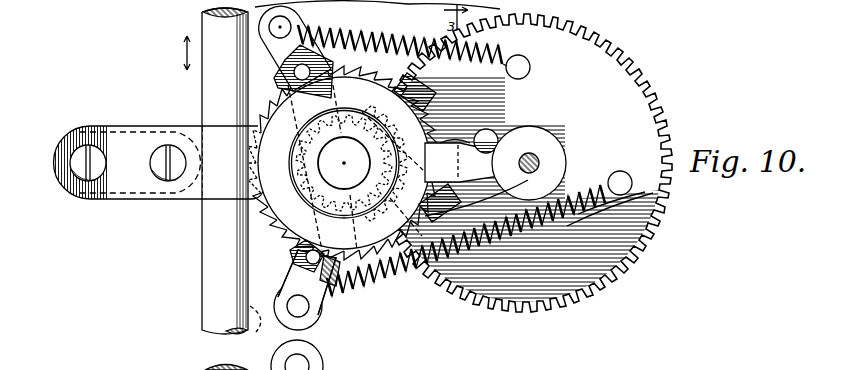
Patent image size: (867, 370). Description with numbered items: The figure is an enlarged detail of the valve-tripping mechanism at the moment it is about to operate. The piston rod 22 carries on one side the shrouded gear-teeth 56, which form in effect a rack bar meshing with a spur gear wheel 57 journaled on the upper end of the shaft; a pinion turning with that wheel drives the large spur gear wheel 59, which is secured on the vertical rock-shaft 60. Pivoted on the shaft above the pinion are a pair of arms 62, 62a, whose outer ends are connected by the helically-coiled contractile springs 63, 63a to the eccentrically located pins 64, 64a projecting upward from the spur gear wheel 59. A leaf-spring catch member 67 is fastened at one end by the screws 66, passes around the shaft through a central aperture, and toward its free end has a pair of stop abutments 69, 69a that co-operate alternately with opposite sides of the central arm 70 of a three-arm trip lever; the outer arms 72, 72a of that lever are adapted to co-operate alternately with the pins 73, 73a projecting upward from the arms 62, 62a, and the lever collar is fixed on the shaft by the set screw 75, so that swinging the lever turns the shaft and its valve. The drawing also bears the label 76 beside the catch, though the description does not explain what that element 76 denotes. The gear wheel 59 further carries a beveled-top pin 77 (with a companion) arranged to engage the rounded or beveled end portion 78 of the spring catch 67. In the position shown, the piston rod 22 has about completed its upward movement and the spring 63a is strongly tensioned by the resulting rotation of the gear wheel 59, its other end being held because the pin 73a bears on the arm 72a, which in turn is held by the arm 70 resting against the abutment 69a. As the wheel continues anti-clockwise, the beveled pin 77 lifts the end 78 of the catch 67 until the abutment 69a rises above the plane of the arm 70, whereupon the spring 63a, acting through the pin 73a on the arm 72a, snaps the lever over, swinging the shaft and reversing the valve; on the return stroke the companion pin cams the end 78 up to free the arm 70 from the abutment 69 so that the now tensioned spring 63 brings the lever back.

The piston rod 22 is at (205, 262).
The shrouded gear-teeth 56 is at (262, 328).
The spur gear wheel 57 is at (296, 246).
The large spur gear wheel 59 is at (537, 167).
The vertical rock-shaft 60 is at (539, 159).
The arm 62 is at (305, 20).
The arm 62a is at (313, 320).
The helically-coiled contractile spring 63 is at (389, 38).
The helically-coiled contractile spring 63a is at (466, 247).
The eccentrically located pin 64 is at (531, 70).
The eccentrically located pin 64a is at (630, 163).
The screws 66 is at (160, 153).
The leaf-spring catch member 67 is at (196, 201).
The stop abutment 69 is at (455, 141).
The stop abutment 69a is at (490, 194).
The central arm 70 is at (608, 184).
The outer arm 72 is at (437, 95).
The outer arm 72a is at (332, 276).
The pin 73 is at (303, 71).
The pin 73a is at (327, 294).
The set screw 75 is at (344, 163).
The slide 76 is at (470, 162).
The pin or lug 77 is at (496, 136).
The rounded or beveled end portion 78 is at (529, 163).